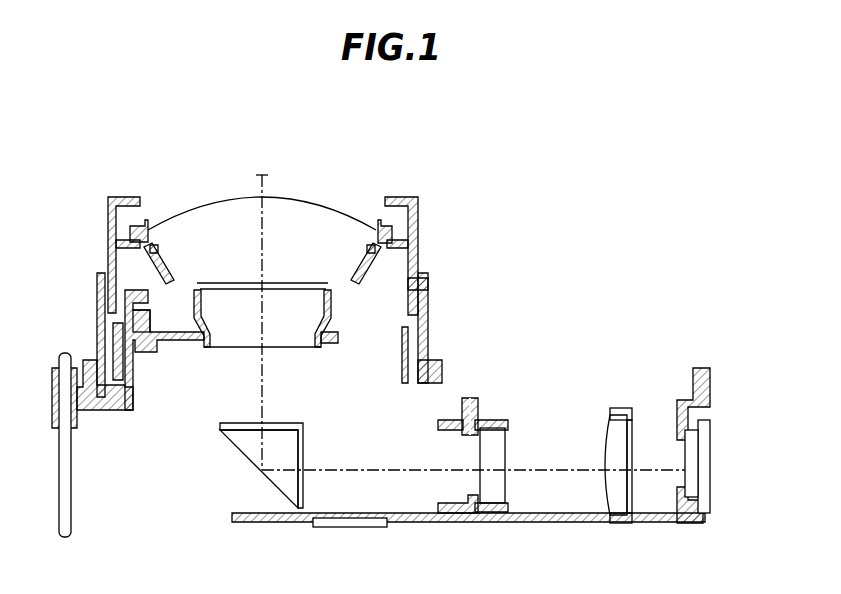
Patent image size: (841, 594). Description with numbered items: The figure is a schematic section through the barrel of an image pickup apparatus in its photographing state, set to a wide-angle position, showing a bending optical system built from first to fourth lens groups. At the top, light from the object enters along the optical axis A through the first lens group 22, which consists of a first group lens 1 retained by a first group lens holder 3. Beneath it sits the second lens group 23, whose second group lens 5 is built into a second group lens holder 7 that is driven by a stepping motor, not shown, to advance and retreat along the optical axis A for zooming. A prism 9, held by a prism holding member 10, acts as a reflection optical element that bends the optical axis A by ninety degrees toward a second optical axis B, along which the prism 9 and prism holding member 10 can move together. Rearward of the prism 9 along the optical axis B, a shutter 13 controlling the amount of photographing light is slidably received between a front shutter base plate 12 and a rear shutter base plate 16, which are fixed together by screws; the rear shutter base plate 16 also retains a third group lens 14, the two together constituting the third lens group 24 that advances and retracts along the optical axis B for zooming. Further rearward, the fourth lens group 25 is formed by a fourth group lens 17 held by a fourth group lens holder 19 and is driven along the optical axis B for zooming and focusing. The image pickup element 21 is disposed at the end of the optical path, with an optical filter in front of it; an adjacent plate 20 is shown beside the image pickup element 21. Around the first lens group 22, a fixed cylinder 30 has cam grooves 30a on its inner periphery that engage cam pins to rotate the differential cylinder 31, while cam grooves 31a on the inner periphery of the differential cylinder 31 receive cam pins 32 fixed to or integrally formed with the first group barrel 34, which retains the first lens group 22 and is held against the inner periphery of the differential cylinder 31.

The first group lens 1 is at (306, 195).
The first group lens holder 3 is at (135, 226).
The second group lens 5 is at (243, 297).
The second group lens holder 7 is at (150, 298).
The prism 9 is at (280, 478).
The prism holding member 10 is at (234, 428).
The front shutter base plate 12 is at (462, 420).
The shutter 13 is at (468, 400).
The third group lens 14 is at (490, 485).
The rear shutter base plate 16 is at (500, 418).
The fourth group lens 17 is at (617, 497).
The fourth group lens holder 19 is at (620, 408).
The image sensor 20 is at (688, 508).
The image pickup element 21 is at (708, 478).
The first lens group 22 is at (384, 224).
The second lens group 23 is at (353, 296).
The third lens group 24 is at (504, 394).
The fourth lens group 25 is at (637, 391).
The fixed cylinder 30 is at (432, 358).
The cam grooves 30a is at (443, 373).
The differential cylinder 31 is at (97, 292).
The cam grooves 31a is at (422, 280).
The cam pins 32 is at (410, 290).
The first group barrel 34 is at (108, 200).
The optical axis A is at (262, 175).
The second optical axis B is at (365, 472).